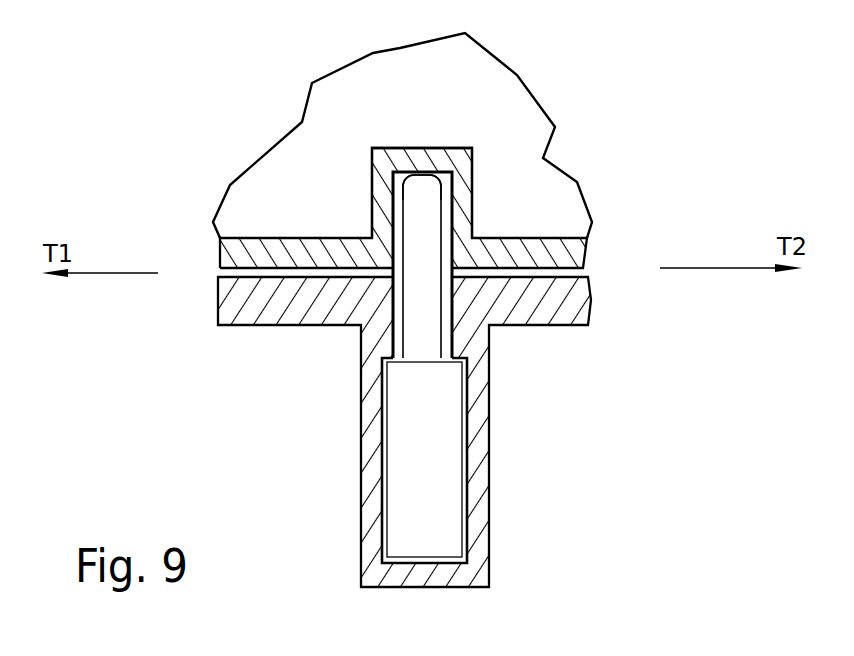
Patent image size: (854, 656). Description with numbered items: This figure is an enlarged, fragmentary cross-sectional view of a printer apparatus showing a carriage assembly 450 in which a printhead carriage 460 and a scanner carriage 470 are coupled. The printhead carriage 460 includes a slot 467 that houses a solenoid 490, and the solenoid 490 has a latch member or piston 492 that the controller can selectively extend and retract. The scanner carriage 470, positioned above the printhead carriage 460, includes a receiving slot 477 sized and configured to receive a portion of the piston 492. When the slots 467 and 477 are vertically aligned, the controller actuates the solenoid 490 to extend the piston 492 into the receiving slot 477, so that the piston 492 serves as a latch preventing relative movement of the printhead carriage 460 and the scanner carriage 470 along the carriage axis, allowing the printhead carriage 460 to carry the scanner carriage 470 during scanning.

The carriage assembly 450 is at (628, 163).
The printhead carriage 460 is at (575, 305).
The slot 467 is at (452, 310).
The scanner carriage 470 is at (498, 115).
The receiving slot 477 is at (448, 173).
The solenoid 490 is at (440, 518).
The piston 492 is at (420, 323).